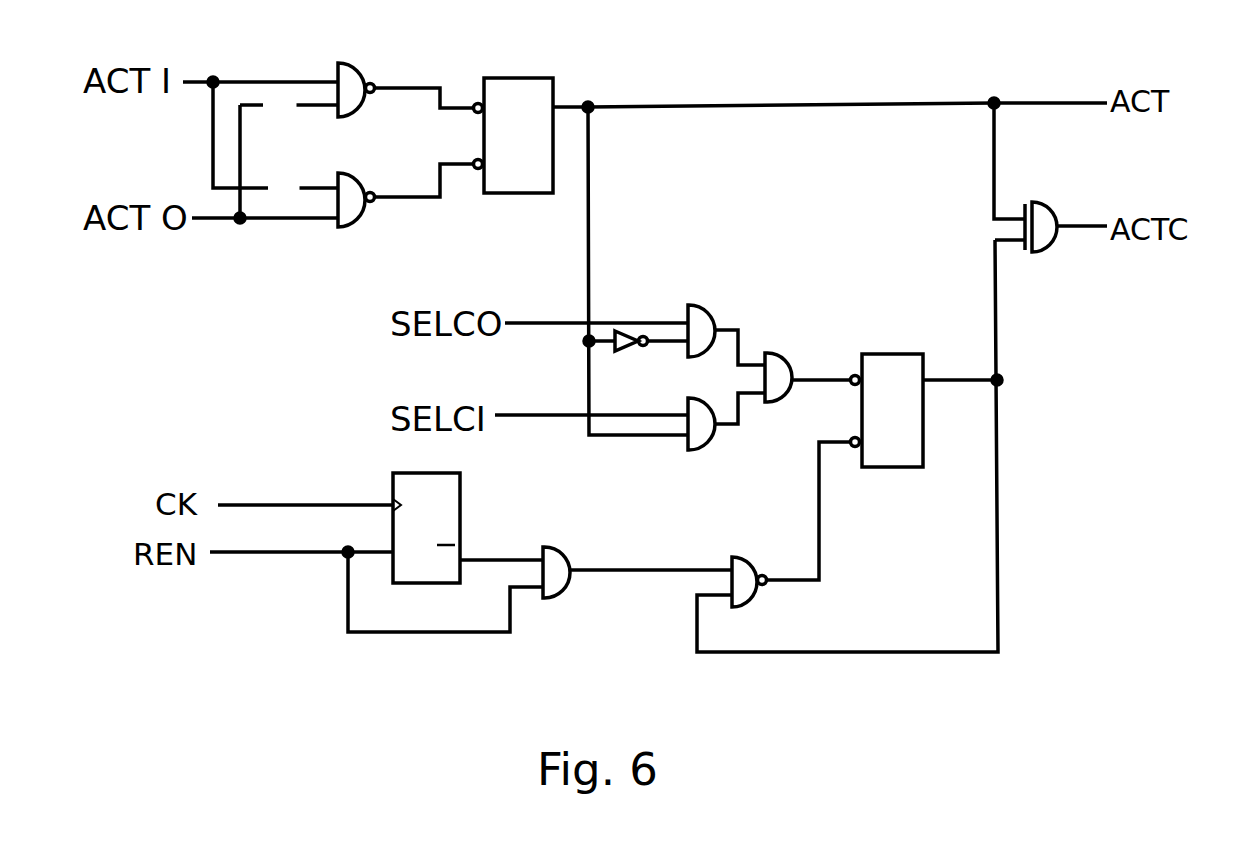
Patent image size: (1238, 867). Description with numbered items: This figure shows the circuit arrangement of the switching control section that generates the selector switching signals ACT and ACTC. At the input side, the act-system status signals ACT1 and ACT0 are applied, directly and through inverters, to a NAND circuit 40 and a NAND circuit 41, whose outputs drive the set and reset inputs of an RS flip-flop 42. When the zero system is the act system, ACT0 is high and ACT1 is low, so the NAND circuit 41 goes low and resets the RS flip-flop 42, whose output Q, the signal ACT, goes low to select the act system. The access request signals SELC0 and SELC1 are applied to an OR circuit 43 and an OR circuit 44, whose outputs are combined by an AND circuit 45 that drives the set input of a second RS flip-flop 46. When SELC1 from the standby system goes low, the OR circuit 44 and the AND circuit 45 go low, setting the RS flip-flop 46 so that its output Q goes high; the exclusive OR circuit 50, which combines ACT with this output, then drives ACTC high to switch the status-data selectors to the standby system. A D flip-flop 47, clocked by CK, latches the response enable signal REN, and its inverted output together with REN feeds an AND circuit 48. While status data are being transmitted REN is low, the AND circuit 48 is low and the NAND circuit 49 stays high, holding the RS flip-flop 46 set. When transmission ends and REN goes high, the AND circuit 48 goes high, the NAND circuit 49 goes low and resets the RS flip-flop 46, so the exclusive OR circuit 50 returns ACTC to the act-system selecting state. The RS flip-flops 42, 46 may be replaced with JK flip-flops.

The NAND circuit 40 is at (378, 63).
The NAND circuit 41 is at (382, 173).
The RS flip-flop 42 is at (525, 123).
The OR circuit 43 is at (691, 299).
The OR circuit 44 is at (721, 450).
The AND circuit 45 is at (802, 347).
The RS flip-flop 46 is at (906, 400).
The D flip-flop 47 is at (471, 543).
The AND circuit 48 is at (588, 546).
The NAND circuit 49 is at (784, 596).
The exclusive OR circuit 50 is at (1065, 194).